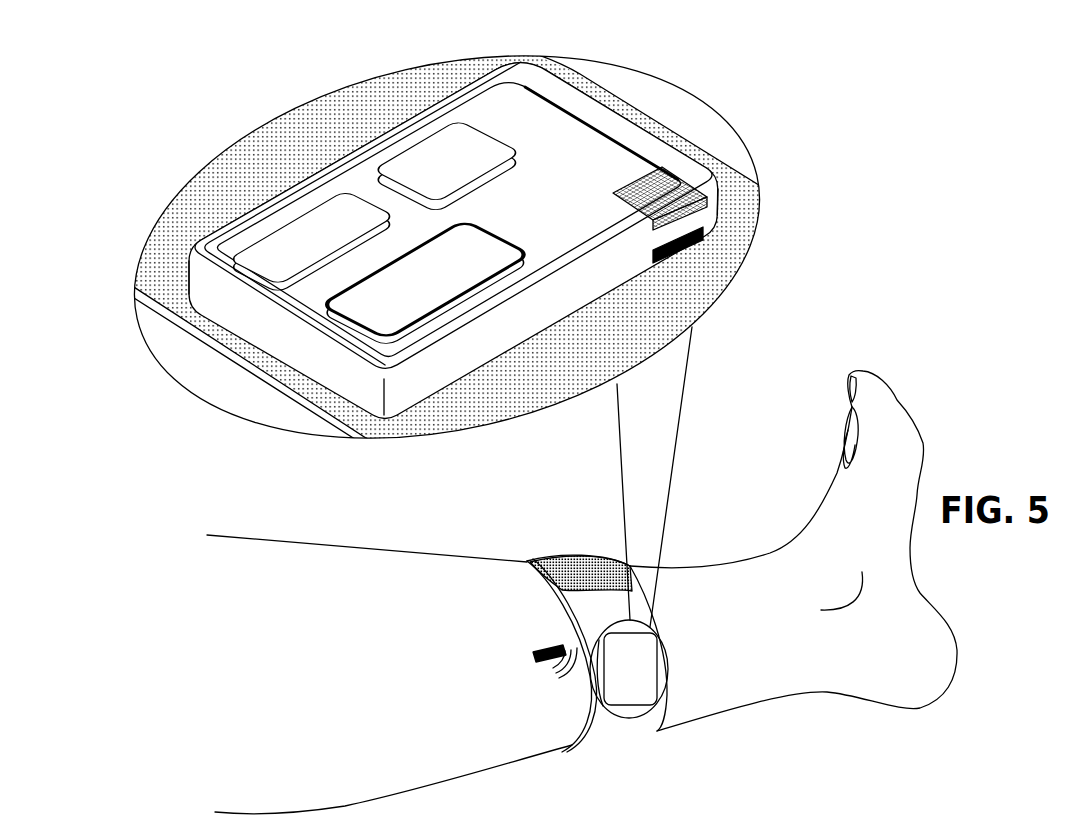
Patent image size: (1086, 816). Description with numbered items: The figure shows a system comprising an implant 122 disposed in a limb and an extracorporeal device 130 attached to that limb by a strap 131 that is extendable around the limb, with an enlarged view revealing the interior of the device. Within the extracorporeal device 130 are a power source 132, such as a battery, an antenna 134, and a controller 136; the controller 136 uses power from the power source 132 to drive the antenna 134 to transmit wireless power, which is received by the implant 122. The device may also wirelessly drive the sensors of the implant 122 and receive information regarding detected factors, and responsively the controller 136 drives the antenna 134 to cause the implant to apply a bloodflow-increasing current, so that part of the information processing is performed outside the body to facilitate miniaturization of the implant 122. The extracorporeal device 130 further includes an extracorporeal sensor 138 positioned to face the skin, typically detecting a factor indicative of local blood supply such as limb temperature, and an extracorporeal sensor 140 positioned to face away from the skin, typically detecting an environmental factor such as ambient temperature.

The implant 122 is at (533, 655).
The extracorporeal device 130 is at (697, 117).
The strap 131 is at (583, 603).
The power source 132 is at (386, 177).
The antenna 134 is at (352, 292).
The controller 136 is at (283, 234).
The extracorporeal sensor 138 is at (682, 262).
The extracorporeal sensor 140 is at (697, 198).